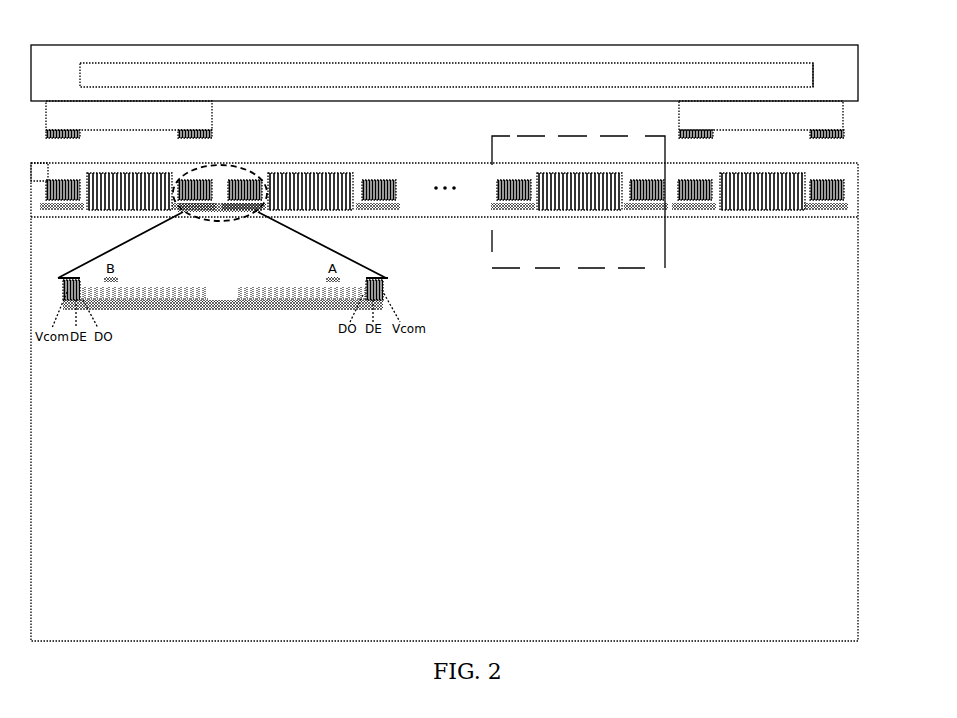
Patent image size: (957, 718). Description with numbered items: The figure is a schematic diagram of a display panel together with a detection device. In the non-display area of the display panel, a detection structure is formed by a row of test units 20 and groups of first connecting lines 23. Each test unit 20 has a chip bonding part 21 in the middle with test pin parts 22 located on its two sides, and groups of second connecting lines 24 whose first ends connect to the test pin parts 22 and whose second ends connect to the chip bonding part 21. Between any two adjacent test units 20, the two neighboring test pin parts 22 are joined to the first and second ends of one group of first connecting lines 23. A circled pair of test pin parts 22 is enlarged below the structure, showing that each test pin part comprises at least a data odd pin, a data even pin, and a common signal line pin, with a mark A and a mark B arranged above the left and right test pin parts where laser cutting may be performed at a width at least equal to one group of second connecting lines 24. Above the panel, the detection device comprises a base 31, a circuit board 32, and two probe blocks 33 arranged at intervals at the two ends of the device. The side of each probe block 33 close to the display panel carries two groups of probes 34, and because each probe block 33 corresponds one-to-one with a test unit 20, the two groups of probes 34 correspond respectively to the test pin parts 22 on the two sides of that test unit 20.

The test unit 20 is at (635, 270).
The chip bonding part 21 is at (578, 210).
The test pin part 22 is at (520, 205).
The first connecting line 23 is at (680, 210).
The second connecting line 24 is at (625, 182).
The base 31 is at (826, 55).
The circuit board 32 is at (790, 72).
The probe block 33 is at (843, 101).
The probe 34 is at (812, 134).